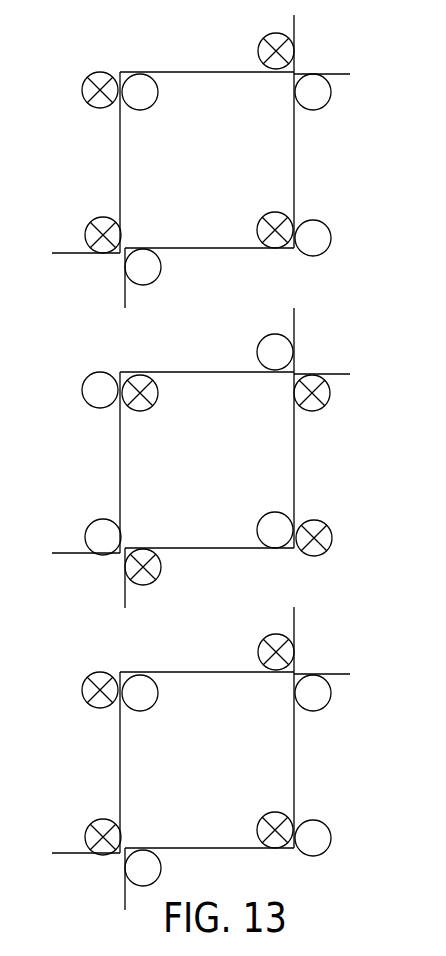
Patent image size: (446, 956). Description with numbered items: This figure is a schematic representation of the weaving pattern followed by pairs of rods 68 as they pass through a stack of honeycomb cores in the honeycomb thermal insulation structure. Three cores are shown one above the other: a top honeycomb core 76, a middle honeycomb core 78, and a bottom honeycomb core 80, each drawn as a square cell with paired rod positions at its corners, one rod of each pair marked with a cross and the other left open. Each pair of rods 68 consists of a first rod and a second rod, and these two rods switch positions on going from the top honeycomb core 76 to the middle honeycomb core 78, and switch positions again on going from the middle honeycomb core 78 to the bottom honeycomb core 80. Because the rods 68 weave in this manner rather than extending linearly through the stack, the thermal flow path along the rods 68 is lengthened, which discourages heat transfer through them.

The rods 68 is at (292, 42).
The top honeycomb core 76 is at (247, 161).
The middle honeycomb core 78 is at (244, 458).
The bottom honeycomb core 80 is at (247, 758).